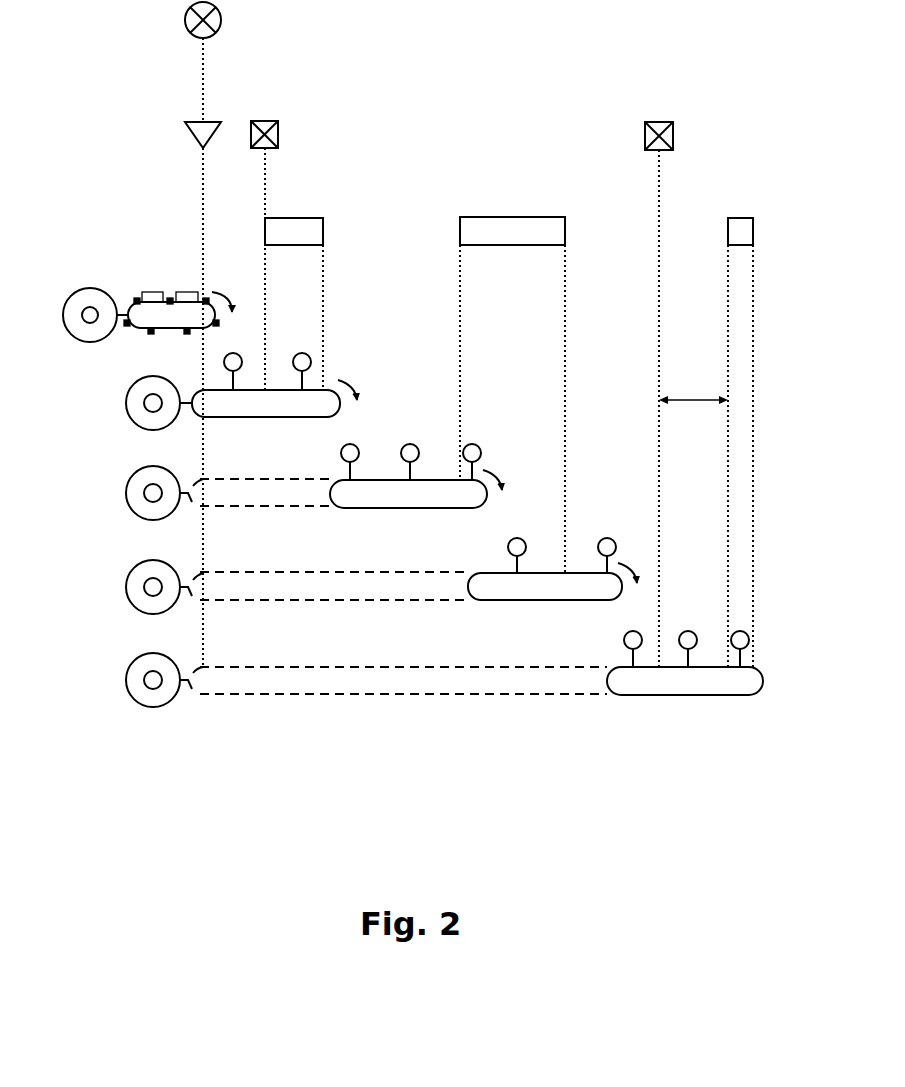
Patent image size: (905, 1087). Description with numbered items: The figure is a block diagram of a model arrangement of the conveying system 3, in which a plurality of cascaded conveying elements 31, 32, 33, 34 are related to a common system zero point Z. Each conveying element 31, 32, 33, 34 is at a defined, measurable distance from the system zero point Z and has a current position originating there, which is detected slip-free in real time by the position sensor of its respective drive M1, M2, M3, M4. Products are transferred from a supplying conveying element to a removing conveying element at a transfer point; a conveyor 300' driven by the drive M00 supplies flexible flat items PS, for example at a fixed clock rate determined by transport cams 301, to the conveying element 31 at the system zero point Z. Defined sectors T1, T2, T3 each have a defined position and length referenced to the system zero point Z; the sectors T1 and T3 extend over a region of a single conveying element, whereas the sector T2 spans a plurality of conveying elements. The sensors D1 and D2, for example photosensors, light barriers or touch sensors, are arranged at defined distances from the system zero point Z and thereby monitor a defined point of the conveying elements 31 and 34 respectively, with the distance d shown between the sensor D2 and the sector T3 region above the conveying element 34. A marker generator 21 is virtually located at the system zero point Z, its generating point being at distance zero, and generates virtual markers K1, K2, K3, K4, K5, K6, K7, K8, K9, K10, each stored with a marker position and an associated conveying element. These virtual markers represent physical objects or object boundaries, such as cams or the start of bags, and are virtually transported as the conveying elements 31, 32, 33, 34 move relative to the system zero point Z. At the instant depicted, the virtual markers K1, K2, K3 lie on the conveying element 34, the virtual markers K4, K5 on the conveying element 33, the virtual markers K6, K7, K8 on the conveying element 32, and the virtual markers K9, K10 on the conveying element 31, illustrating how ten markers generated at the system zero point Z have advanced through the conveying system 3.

The system zero point Z is at (185, 16).
The marker generator 21 is at (196, 134).
The sensor D1 is at (279, 130).
The sensor D2 is at (673, 130).
The sector T1 is at (318, 232).
The sector T2 is at (560, 230).
The sector T3 is at (733, 235).
The distance d is at (693, 387).
The transport cams 301 is at (137, 300).
The flexible flat items PS is at (152, 294).
The conveyor 300' is at (178, 330).
The drive M00 is at (87, 342).
The drive M1 is at (130, 410).
The drive M2 is at (130, 500).
The drive M3 is at (130, 594).
The drive M4 is at (130, 687).
The conveying element 31 is at (282, 420).
The conveying element 32 is at (412, 512).
The conveying element 33 is at (542, 605).
The conveying element 34 is at (715, 688).
The virtual marker K1 is at (739, 641).
The virtual marker K2 is at (686, 641).
The virtual marker K3 is at (631, 641).
The virtual marker K4 is at (605, 547).
The virtual marker K5 is at (515, 547).
The virtual marker K6 is at (471, 454).
The virtual marker K7 is at (408, 454).
The virtual marker K8 is at (348, 454).
The virtual marker K9 is at (300, 363).
The virtual marker K10 is at (231, 363).
The conveying system 3 is at (205, 715).